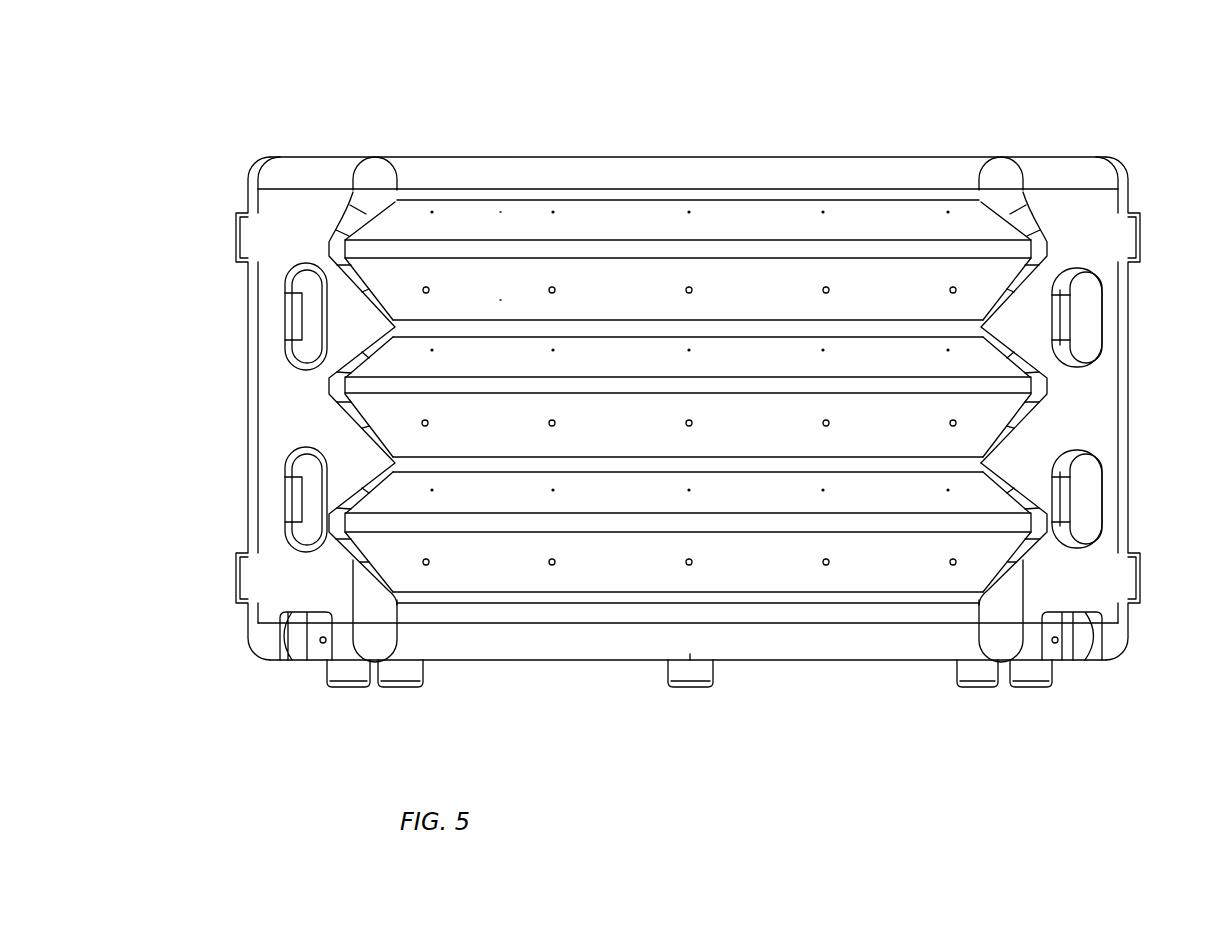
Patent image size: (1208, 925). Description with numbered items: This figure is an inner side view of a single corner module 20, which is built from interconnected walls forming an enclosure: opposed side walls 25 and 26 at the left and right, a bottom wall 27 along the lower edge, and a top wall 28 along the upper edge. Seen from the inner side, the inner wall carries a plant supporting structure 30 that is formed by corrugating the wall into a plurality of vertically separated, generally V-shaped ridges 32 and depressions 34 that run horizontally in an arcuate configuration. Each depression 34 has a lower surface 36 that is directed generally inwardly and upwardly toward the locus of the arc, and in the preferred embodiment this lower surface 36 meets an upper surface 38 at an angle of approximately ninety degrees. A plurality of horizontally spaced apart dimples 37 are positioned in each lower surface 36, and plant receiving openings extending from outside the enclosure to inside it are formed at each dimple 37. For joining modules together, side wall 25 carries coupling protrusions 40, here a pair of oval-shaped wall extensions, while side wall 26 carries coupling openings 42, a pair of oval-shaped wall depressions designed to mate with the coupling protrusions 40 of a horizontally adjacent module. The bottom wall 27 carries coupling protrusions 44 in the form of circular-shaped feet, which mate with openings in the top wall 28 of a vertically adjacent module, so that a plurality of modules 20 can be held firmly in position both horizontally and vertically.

The corner module 20 is at (873, 91).
The side wall 25 is at (1108, 242).
The side wall 26 is at (270, 283).
The bottom wall 27 is at (780, 660).
The top wall 28 is at (428, 156).
The plant supporting structure 30 is at (603, 565).
The ridge 32 is at (1017, 442).
The depression 34 is at (1003, 522).
The lower surface 36 is at (915, 303).
The dimple 37 is at (684, 290).
The upper surface 38 is at (905, 233).
The coupling protrusions 40 is at (1092, 335).
The coupling openings 42 is at (240, 381).
The coupling protrusions 44 is at (405, 682).